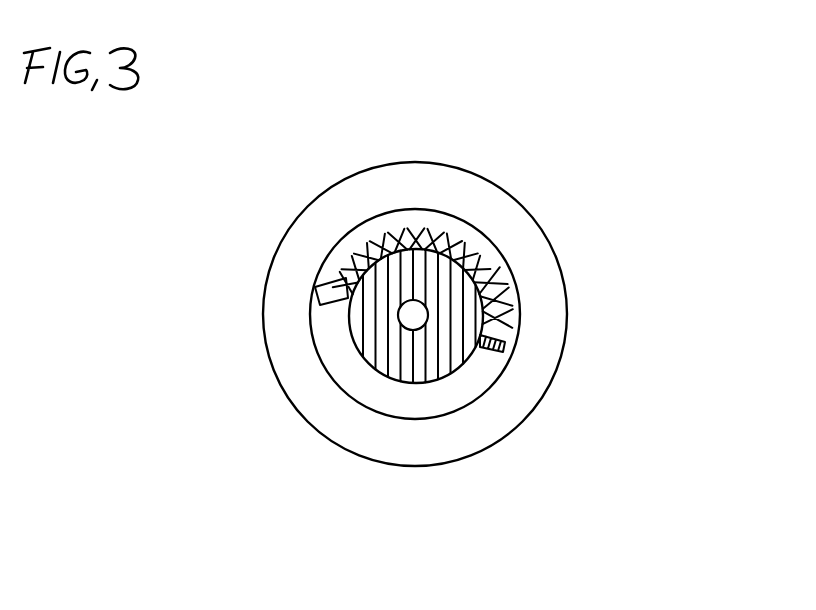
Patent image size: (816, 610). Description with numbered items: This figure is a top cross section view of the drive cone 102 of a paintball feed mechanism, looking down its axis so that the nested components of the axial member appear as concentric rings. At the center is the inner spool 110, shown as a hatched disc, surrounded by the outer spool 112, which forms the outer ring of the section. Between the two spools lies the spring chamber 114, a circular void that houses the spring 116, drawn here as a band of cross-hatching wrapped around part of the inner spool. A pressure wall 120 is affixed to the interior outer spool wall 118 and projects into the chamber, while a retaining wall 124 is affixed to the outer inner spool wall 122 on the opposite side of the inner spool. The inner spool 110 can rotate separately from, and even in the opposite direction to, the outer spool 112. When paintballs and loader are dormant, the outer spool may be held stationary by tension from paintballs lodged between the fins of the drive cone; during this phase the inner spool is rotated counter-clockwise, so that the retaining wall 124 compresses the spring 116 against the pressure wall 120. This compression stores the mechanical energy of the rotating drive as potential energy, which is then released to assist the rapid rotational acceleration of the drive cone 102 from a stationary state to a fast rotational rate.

The drive cone 102 is at (652, 146).
The inner spool 110 is at (382, 356).
The outer spool 112 is at (300, 388).
The spring chamber 114 is at (392, 217).
The spring 116 is at (493, 243).
The interior outer spool wall 118 is at (341, 368).
The pressure wall 120 is at (315, 287).
The outer inner spool wall 122 is at (451, 390).
The retaining wall 124 is at (483, 353).